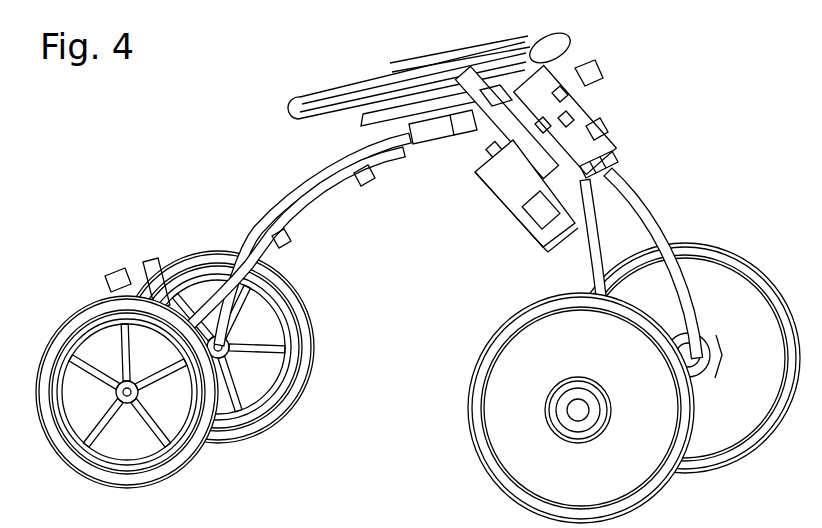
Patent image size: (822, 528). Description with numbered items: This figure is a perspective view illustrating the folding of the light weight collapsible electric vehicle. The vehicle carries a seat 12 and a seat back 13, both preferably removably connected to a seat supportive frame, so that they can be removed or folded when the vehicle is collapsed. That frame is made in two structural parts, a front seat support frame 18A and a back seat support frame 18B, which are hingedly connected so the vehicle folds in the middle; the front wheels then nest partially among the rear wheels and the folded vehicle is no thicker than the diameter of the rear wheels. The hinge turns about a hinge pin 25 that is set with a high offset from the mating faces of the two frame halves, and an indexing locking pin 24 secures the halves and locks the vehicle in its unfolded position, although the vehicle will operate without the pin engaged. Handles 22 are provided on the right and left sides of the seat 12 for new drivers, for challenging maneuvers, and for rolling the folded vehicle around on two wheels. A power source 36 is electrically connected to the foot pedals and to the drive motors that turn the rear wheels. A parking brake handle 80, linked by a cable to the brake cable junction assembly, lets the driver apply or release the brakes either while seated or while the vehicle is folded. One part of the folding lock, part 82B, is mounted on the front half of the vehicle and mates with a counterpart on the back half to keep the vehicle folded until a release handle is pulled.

The seat 12 is at (362, 118).
The seat back 13 is at (342, 86).
The front seat supportive frame 18A is at (356, 139).
The rear seat supportive frame 18B is at (642, 152).
The handles 22 is at (538, 130).
The locking pin 24 is at (497, 166).
The hinge pin 25 is at (492, 156).
The power source 36 is at (533, 233).
The parking brake handle 80 is at (366, 182).
The locking mechanism part 82B is at (284, 246).